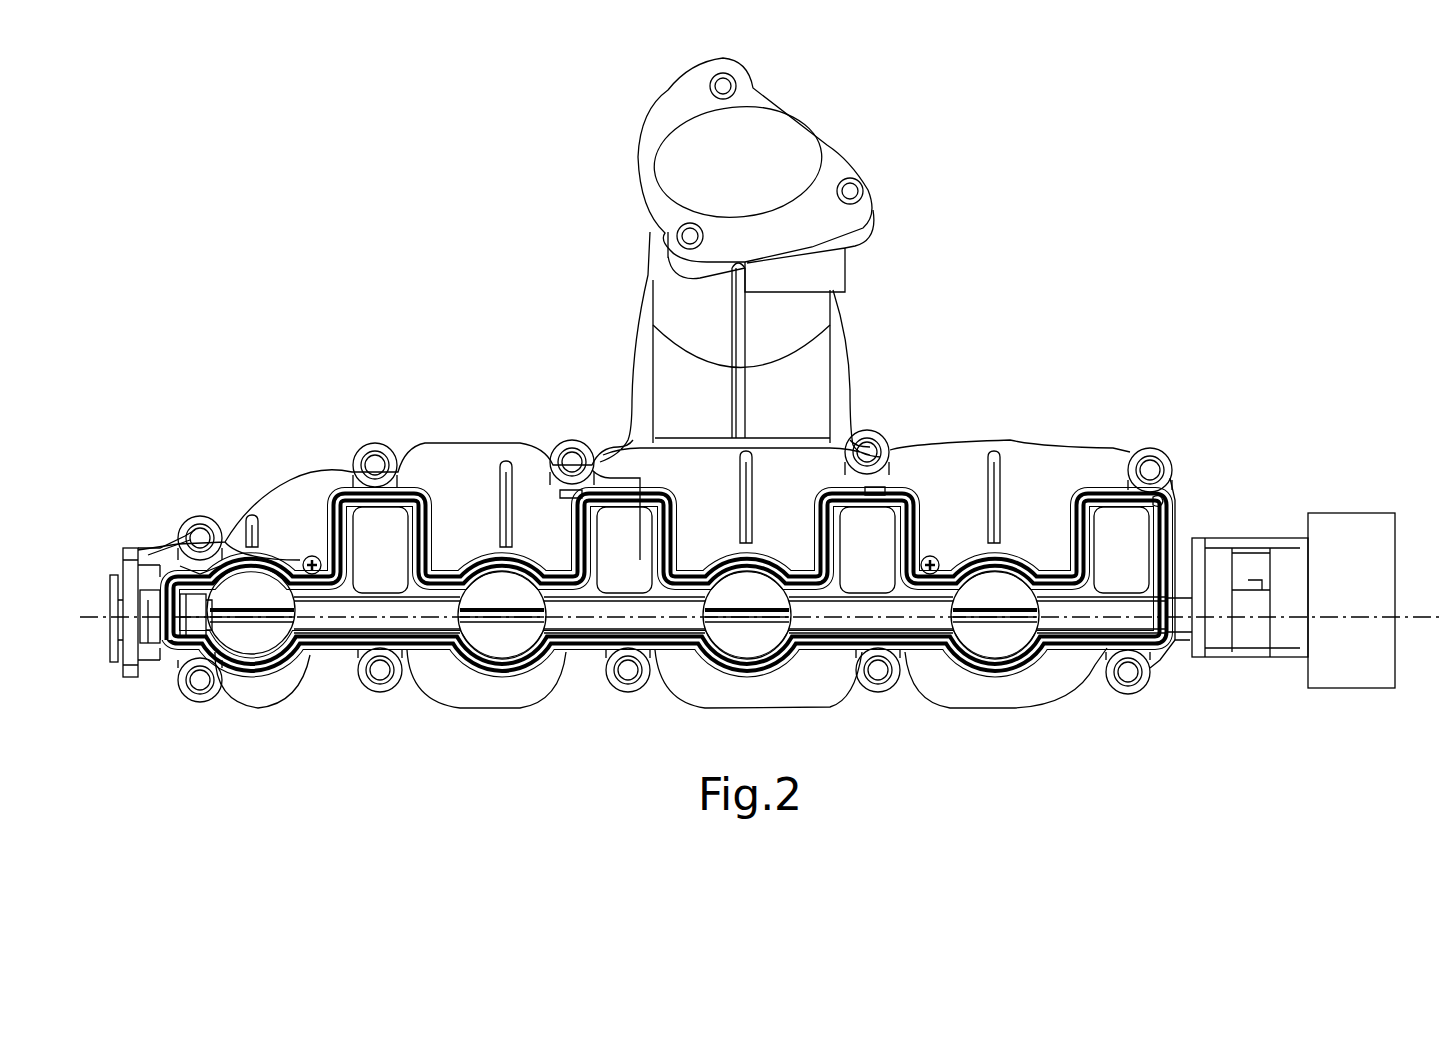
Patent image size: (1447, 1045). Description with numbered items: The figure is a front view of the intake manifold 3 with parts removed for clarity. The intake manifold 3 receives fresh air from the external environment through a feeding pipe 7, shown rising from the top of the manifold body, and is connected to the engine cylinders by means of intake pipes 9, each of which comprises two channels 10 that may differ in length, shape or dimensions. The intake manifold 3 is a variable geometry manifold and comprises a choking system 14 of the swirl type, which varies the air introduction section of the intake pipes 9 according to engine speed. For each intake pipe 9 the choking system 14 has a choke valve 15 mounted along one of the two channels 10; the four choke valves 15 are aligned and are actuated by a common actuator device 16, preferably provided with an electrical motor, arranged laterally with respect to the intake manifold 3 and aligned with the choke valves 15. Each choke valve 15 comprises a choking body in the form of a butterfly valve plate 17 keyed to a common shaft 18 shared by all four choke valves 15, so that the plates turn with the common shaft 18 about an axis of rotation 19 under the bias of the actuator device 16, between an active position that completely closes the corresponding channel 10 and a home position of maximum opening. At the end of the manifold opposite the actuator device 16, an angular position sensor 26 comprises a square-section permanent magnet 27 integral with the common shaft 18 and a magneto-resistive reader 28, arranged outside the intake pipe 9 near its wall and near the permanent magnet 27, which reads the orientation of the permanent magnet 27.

The intake manifold 3 is at (1030, 225).
The feeding pipe 7 is at (762, 152).
The intake pipes 9 is at (338, 745).
The channels 10 is at (370, 548).
The choking system 14 is at (1185, 212).
The choke valves 15 is at (248, 730).
The actuator device 16 is at (1353, 530).
The butterfly valve plate 17 is at (263, 619).
The common shaft 18 is at (1085, 620).
The axis of rotation 19 is at (1410, 620).
The angular position sensor 26 is at (158, 497).
The permanent magnet 27 is at (172, 672).
The reader 28 is at (120, 640).